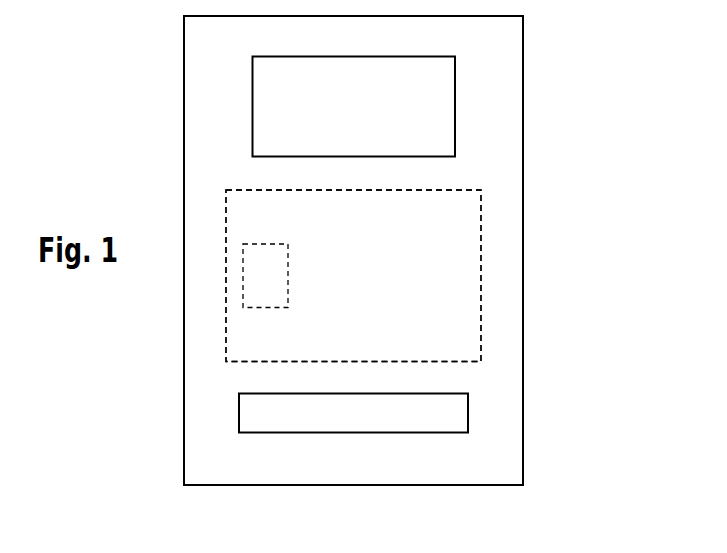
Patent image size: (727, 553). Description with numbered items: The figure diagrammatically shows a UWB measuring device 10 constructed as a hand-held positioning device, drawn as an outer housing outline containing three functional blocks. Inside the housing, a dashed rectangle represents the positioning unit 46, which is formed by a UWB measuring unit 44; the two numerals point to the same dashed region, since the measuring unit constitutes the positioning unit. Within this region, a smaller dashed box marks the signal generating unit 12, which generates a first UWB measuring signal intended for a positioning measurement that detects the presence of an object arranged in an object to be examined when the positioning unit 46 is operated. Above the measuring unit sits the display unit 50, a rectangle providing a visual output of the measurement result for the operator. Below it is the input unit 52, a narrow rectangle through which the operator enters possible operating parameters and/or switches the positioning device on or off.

The UWB measuring device 10 is at (588, 109).
The signal generating unit 12 is at (257, 273).
The UWB measuring unit 44 is at (500, 325).
The positioning unit 46 is at (500, 294).
The display unit 50 is at (270, 106).
The input unit 52 is at (258, 413).